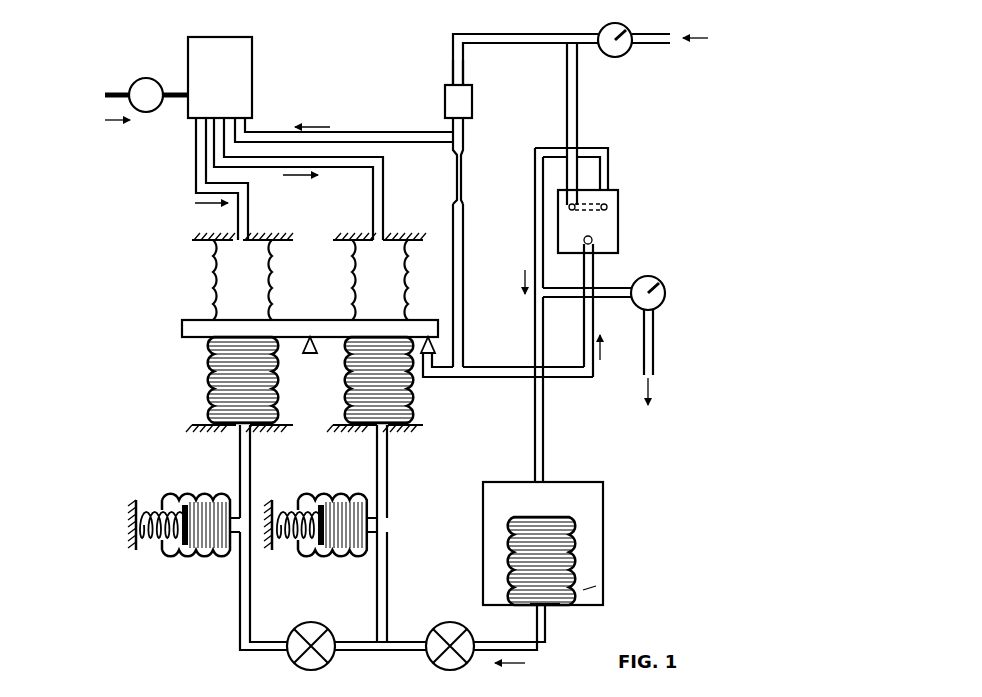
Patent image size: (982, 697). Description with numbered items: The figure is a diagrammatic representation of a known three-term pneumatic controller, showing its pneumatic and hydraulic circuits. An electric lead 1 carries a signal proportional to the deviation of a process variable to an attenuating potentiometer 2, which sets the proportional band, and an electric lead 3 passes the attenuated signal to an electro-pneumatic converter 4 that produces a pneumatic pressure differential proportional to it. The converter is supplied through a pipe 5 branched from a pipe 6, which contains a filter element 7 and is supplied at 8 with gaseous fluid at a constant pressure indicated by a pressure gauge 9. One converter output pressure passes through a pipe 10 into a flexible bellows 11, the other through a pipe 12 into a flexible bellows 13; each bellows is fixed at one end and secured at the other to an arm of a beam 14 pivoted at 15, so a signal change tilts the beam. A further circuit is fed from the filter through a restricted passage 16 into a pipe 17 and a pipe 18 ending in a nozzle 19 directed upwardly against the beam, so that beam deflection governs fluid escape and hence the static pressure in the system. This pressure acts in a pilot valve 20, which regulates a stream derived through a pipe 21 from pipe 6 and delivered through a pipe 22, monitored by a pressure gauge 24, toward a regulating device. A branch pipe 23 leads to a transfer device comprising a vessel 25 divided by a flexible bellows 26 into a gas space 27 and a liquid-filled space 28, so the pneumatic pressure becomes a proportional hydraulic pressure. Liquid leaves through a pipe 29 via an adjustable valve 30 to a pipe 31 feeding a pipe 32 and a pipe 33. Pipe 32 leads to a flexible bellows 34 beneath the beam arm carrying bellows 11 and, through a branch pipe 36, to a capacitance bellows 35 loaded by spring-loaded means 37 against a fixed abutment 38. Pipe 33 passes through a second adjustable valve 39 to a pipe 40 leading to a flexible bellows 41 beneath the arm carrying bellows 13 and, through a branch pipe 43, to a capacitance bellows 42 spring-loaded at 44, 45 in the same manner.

The electric lead 1 is at (116, 92).
The potentiometer 2 is at (146, 78).
The electric lead 3 is at (177, 92).
The electro-pneumatic converter 4 is at (212, 84).
The pipe 5 is at (350, 132).
The pipe 6 is at (452, 76).
The filter element 7 is at (472, 101).
The supply 8 is at (663, 36).
The pressure gauge 9 is at (619, 57).
The pipe 10 is at (349, 168).
The flexible bellows 11 is at (410, 290).
The pipe 12 is at (249, 212).
The flexible bellows 13 is at (278, 290).
The beam 14 is at (317, 320).
The pivot 15 is at (313, 359).
The restricted passage 16 is at (465, 182).
The pipe 17 is at (465, 285).
The pipe 18 is at (493, 367).
The nozzle 19 is at (436, 348).
The pilot valve 20 is at (619, 225).
The pipe 21 is at (578, 110).
The pipe 22 is at (609, 176).
The branch pipe 23 is at (535, 404).
The pressure gauge 24 is at (663, 285).
The vessel 25 is at (603, 512).
The flexible bellows 26 is at (575, 548).
The gas space 27 is at (596, 586).
The liquid-filled space 28 is at (555, 596).
The pipe 29 is at (503, 642).
The adjustable valve 30 is at (458, 662).
The pipe 31 is at (408, 642).
The pipe 32 is at (389, 580).
The pipe 33 is at (355, 642).
The flexible bellows 34 is at (415, 407).
The capacitance bellows 35 is at (325, 556).
The branch pipe 36 is at (378, 516).
The spring-loaded means 37 is at (295, 538).
The fixed abutment 38 is at (275, 500).
The adjustable valve 39 is at (330, 660).
The pipe 40 is at (258, 652).
The flexible bellows 41 is at (279, 407).
The capacitance bellows 42 is at (206, 494).
The branch pipe 43 is at (236, 548).
The spring loading 44 is at (150, 540).
The abutment 45 is at (137, 500).